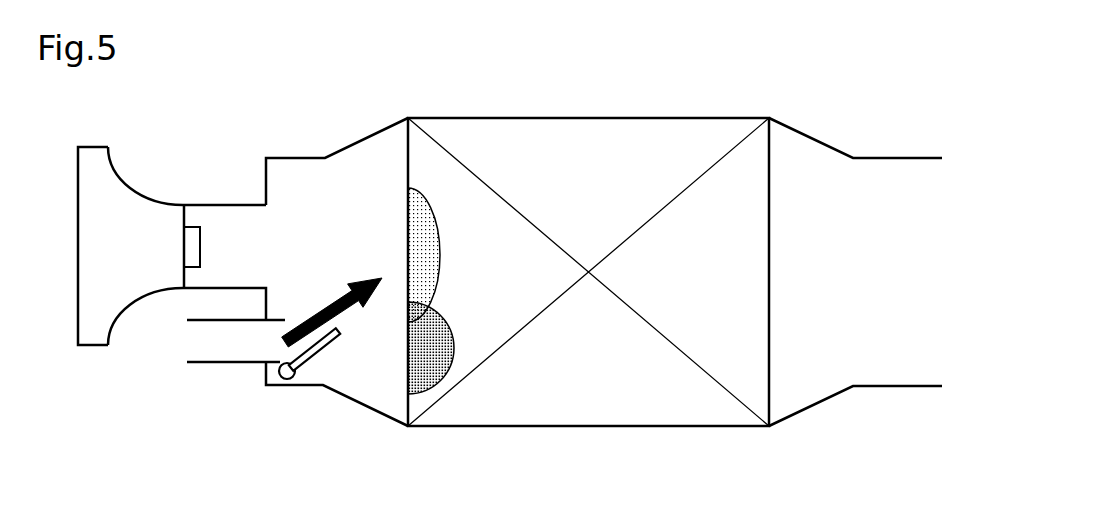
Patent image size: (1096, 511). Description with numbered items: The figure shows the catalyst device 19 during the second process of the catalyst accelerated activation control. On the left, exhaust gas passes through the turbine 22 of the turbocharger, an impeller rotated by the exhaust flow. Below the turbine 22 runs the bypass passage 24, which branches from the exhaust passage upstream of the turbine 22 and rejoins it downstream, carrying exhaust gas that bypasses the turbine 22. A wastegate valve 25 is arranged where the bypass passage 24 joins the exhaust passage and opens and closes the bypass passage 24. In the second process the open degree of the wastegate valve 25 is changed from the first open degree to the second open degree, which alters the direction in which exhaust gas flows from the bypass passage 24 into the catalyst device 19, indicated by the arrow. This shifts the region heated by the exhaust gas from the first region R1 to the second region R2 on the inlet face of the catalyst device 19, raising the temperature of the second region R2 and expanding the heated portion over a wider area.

The catalyst device 19 is at (584, 128).
The turbine 22 is at (137, 190).
The bypass passage 24 is at (226, 366).
The wastegate valve 25 is at (320, 352).
The first region R1 is at (452, 330).
The second region R2 is at (437, 252).